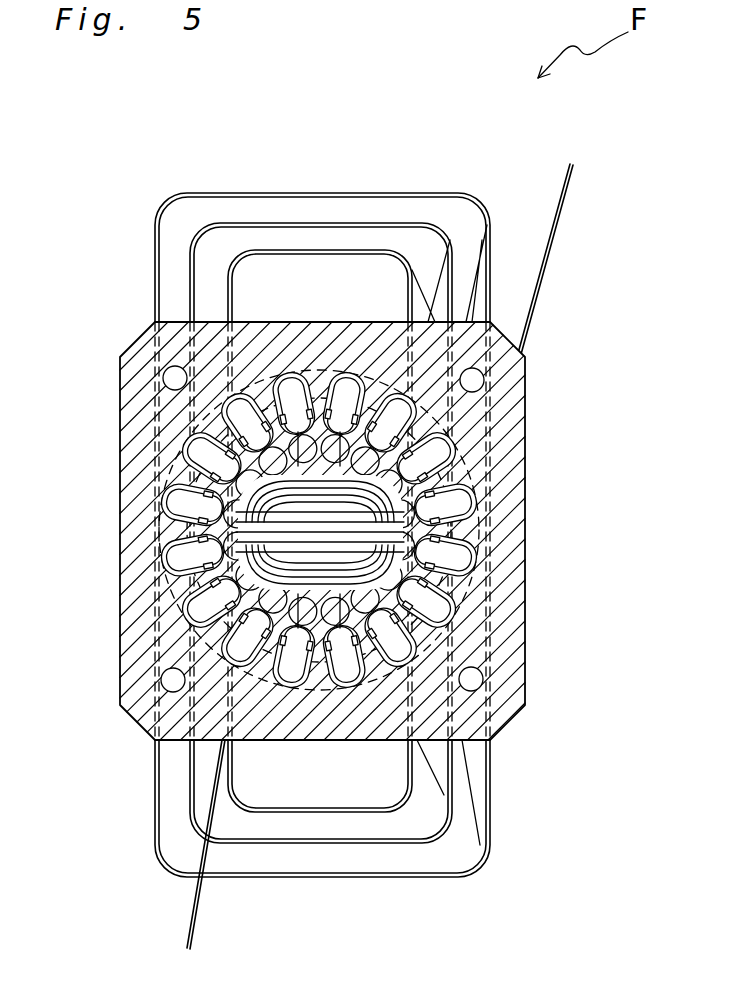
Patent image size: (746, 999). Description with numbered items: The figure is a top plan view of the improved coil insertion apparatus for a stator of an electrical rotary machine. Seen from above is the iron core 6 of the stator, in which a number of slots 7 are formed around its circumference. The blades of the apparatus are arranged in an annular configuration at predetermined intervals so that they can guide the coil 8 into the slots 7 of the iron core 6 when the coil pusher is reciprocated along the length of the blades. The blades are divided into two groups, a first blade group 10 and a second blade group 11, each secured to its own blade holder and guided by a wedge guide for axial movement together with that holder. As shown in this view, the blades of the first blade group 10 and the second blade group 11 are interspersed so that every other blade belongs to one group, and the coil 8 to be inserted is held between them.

The iron core 6 is at (527, 389).
The slots 7 is at (344, 388).
The coil 8 is at (436, 192).
The first blade group 10 is at (235, 492).
The second blade group 11 is at (425, 432).